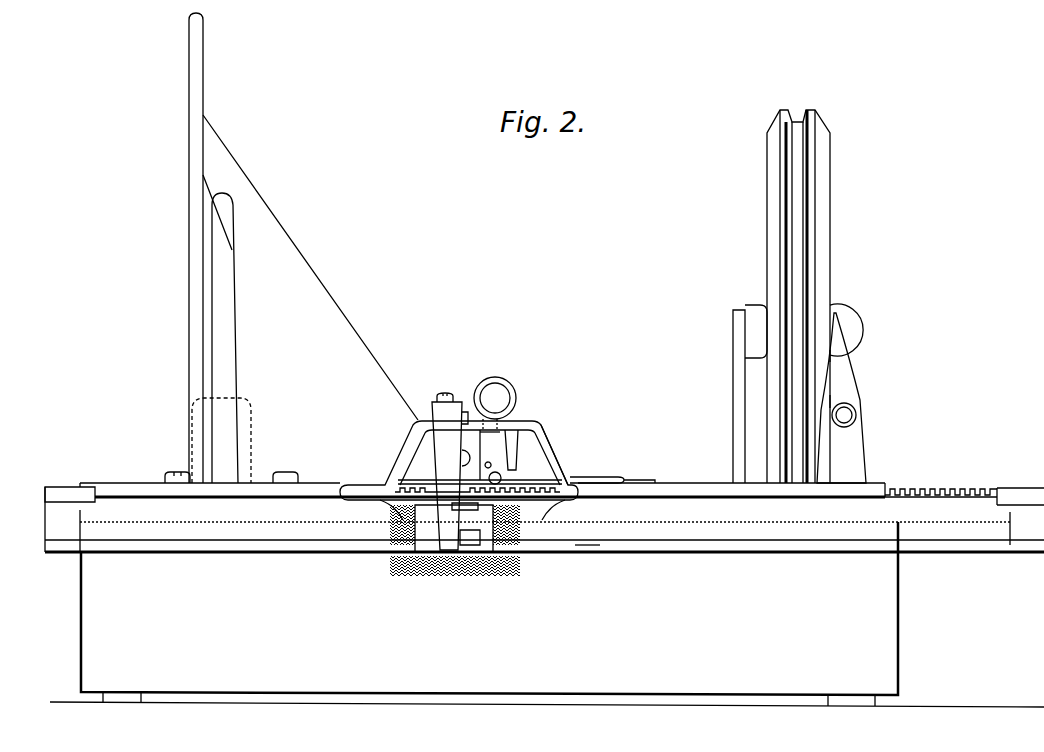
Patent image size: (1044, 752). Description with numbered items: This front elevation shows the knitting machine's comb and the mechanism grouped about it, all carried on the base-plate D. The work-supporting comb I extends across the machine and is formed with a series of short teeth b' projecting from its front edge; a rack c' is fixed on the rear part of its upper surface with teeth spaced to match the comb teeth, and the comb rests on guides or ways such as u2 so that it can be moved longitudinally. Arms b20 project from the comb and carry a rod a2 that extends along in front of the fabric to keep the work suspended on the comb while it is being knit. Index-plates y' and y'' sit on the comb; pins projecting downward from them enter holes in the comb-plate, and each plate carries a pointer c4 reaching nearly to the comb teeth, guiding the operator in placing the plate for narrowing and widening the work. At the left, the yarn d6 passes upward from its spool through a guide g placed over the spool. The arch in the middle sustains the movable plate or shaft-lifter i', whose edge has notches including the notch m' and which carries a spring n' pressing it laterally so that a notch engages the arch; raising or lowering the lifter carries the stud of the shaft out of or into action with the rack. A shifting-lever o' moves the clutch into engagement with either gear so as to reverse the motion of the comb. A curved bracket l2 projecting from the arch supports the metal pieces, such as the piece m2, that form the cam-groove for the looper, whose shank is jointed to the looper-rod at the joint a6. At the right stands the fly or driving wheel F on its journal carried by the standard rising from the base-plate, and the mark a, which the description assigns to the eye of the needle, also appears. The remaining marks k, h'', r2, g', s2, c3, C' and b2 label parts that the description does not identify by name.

The comb I is at (465, 502).
The comb teeth b' is at (545, 528).
The arms b20 is at (544, 519).
The rod a2 is at (544, 544).
The frame bar b2 is at (587, 536).
The base-plate D is at (547, 614).
The rack / slide bar C' is at (618, 349).
The guide g is at (195, 248).
The yarn d6 is at (310, 288).
The index-plate y' is at (459, 460).
The hood foot right y'' is at (554, 462).
The pointer c4 is at (472, 512).
The rack c' is at (478, 484).
The guide or way u2 is at (612, 494).
The lever k is at (447, 471).
The ring handle h'' is at (495, 404).
The joint a6 is at (471, 456).
The shifting-lever o' is at (456, 431).
The rod r2 is at (474, 455).
The notch m' is at (490, 439).
The spring n' is at (514, 450).
The shaft-lifter i' is at (487, 459).
The roller g' is at (496, 478).
The cam-groove piece m2 is at (477, 507).
The curved bracket l2 is at (455, 540).
The spring s2 is at (470, 541).
The eye a is at (798, 296).
The upright bar c3 is at (747, 394).
The fly or driving wheel F is at (841, 393).